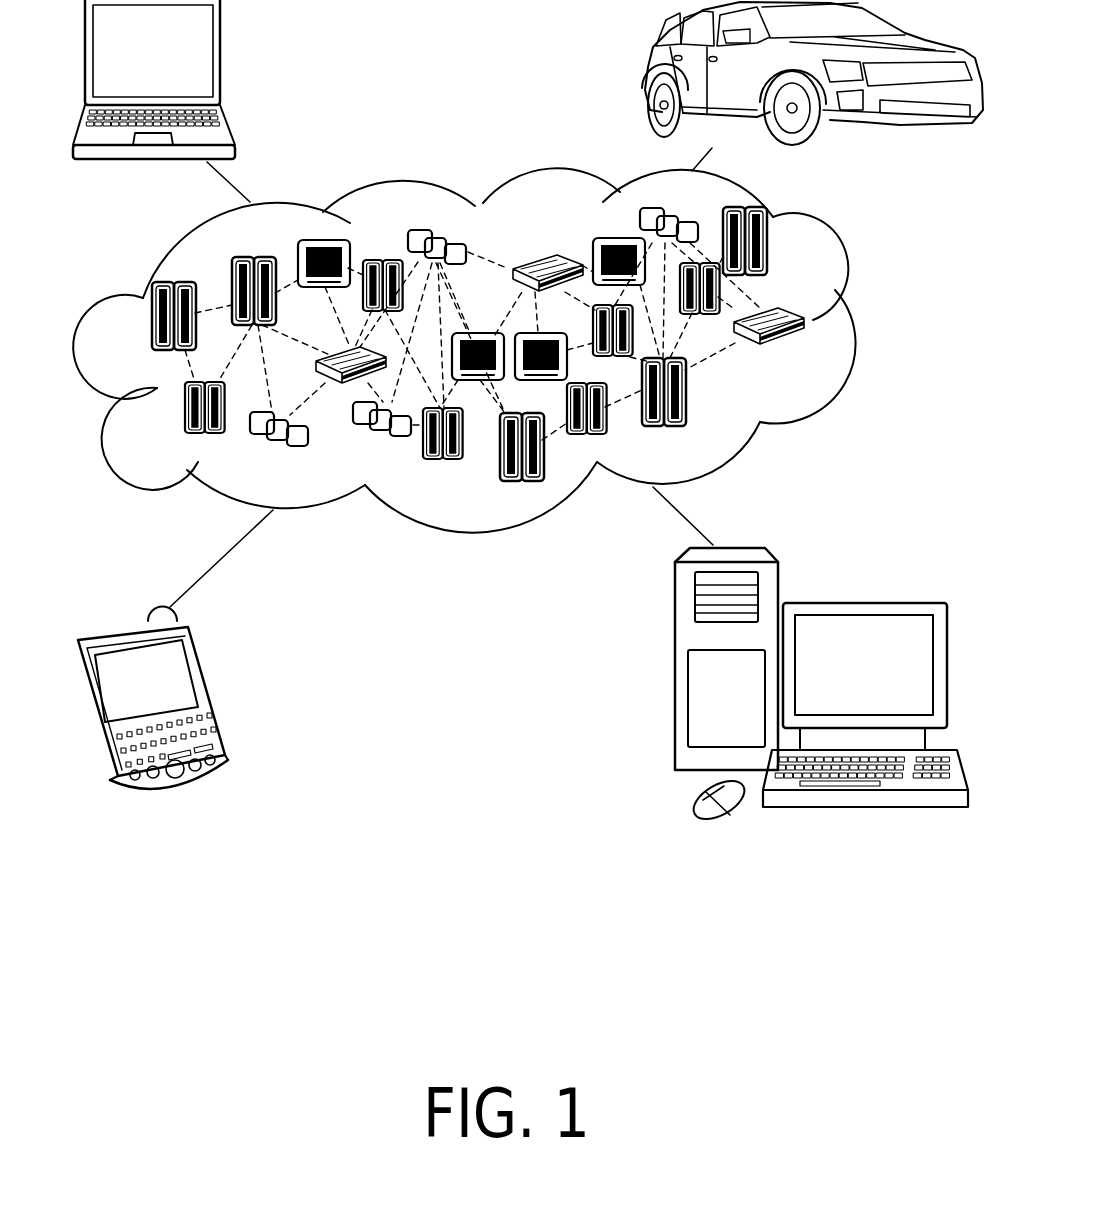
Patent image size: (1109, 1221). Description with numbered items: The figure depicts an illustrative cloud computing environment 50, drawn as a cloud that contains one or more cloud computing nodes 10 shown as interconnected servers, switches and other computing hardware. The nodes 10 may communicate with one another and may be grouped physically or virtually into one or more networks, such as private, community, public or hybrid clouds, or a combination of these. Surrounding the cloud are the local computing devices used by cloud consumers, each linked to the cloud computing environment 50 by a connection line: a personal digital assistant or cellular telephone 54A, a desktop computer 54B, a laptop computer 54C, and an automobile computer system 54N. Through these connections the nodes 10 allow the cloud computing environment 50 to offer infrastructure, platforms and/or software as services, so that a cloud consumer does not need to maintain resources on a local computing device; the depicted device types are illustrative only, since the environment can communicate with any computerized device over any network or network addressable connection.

The cloud computing nodes 10 is at (812, 354).
The cloud computing environment 50 is at (860, 323).
The personal digital assistant (PDA) or cellular telephone 54A is at (210, 697).
The desktop computer 54B is at (862, 603).
The laptop computer 54C is at (223, 58).
The automobile computer system 54N is at (645, 73).